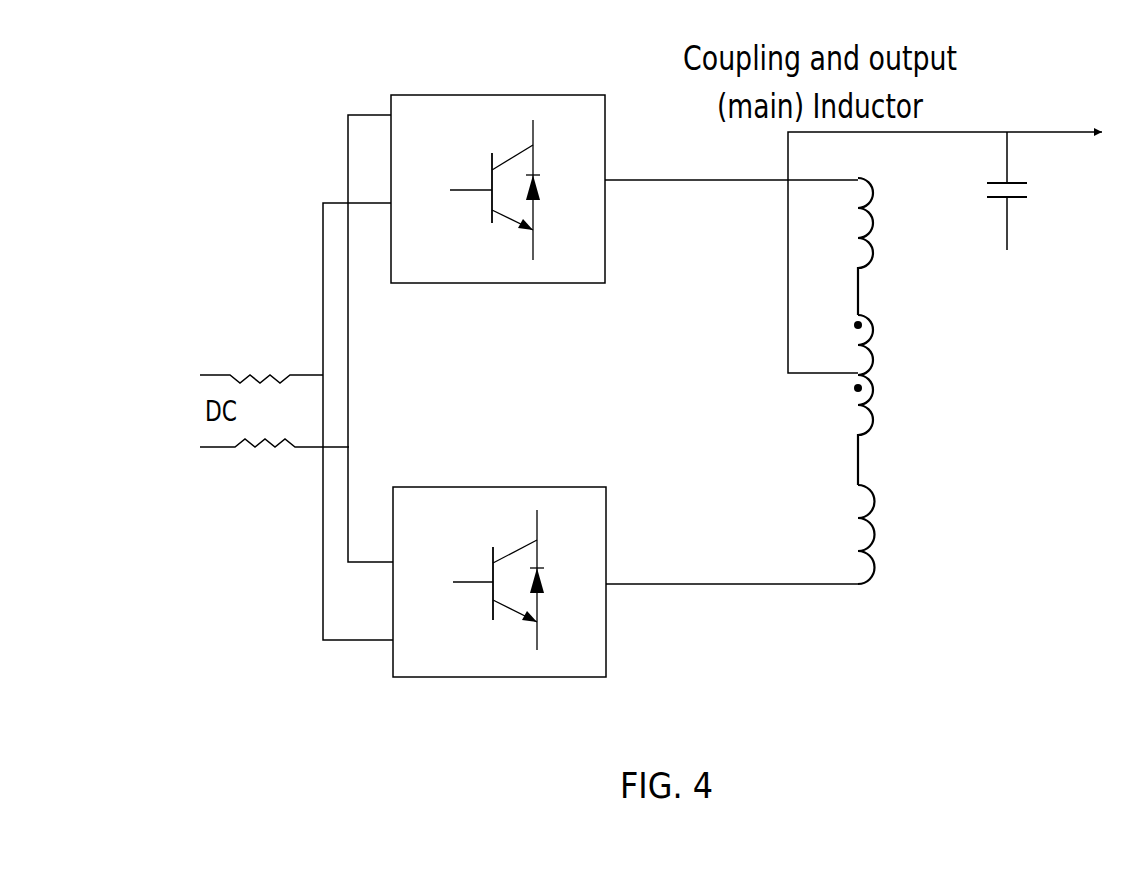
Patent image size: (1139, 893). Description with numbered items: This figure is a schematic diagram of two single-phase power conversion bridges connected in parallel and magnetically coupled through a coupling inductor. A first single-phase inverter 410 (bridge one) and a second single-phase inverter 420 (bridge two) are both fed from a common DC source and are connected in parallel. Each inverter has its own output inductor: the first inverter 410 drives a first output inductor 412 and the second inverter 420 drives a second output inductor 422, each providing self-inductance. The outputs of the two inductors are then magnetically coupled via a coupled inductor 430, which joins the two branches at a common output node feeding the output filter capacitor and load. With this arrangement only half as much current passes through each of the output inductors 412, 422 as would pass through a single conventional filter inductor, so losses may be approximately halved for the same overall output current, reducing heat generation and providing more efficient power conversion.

The single-phase inverter 410 is at (420, 83).
The single-phase inverter 420 is at (582, 480).
The output inductor 412 is at (885, 184).
The output inductor 422 is at (885, 492).
The coupled inductor 430 is at (897, 337).